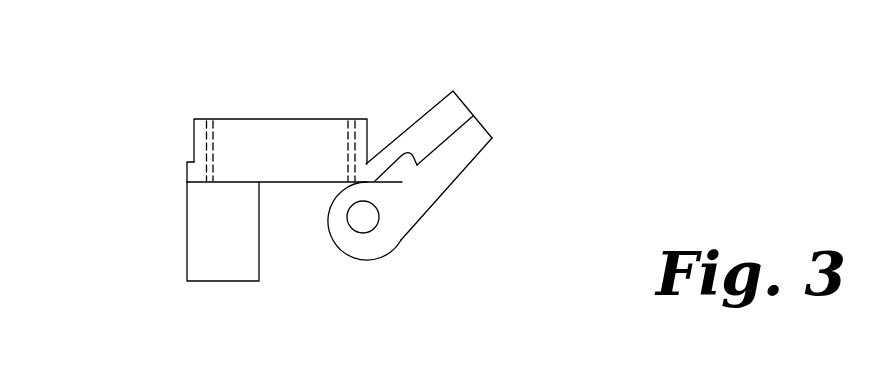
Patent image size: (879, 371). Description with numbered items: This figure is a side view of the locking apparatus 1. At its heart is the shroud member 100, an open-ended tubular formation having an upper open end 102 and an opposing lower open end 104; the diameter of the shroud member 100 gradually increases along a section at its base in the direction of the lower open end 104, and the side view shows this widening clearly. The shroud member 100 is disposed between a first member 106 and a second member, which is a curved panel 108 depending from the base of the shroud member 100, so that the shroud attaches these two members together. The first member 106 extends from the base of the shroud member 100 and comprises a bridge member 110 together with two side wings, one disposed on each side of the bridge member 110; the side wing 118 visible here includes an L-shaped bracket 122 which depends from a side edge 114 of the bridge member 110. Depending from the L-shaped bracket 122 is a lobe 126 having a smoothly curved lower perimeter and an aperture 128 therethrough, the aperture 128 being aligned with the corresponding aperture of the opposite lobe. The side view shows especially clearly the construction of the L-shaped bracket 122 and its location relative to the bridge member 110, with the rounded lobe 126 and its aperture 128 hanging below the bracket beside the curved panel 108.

The vehicle / overall assembly 1 is at (99, 116).
The shroud member 100 is at (318, 118).
The upper open end 102 is at (258, 118).
The lower open end 104 is at (221, 183).
The first member 106 is at (548, 152).
The curved panel 108 is at (220, 277).
The bridge member 110 is at (432, 109).
The side edge 114 is at (452, 97).
The side wing 118 is at (340, 252).
The L-shaped bracket 122 is at (453, 129).
The lobe 126 is at (437, 180).
The aperture 128 is at (365, 217).